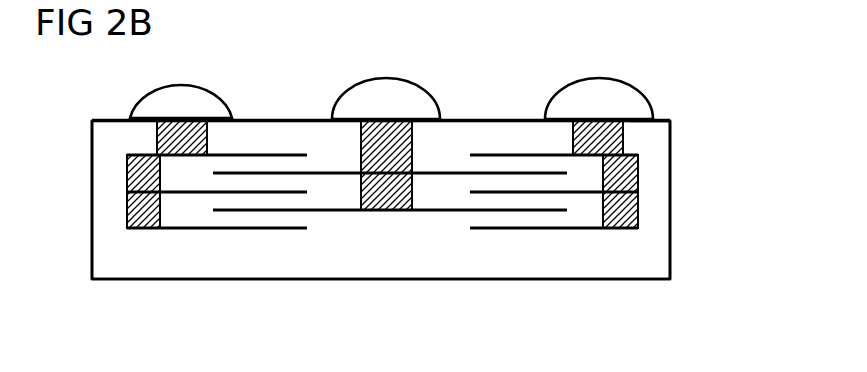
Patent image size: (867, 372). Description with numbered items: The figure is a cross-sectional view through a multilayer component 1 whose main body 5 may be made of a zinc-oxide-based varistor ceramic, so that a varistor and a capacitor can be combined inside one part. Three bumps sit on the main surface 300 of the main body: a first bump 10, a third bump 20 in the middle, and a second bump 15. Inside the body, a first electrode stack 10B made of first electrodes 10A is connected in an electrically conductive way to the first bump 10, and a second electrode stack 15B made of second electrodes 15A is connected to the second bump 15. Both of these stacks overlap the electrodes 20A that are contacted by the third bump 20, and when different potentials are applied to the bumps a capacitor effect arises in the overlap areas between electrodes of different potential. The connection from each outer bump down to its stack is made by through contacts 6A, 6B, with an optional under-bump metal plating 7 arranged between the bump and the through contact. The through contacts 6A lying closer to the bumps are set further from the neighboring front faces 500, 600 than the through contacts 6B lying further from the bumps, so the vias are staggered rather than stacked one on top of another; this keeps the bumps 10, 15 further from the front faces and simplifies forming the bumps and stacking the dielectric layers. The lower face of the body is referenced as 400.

The semiconductor device 1 is at (284, 92).
The main body 5 is at (652, 262).
The under-bump metal plating 7 is at (654, 117).
The through contact 6A is at (156, 136).
The through contact 6B is at (127, 168).
The first bump 10 is at (181, 104).
The first electrode 10A is at (212, 160).
The first electrode stack 10B is at (114, 154).
The second bump 15 is at (598, 105).
The second electrode 15A is at (566, 160).
The second electrode stack 15B is at (646, 154).
The third bump 20 is at (387, 105).
The electrode of the third electrode stack 20A is at (341, 176).
The main surface 300 is at (471, 118).
The bottom surface layer 400 is at (443, 281).
The front face 500 is at (92, 240).
The front face 600 is at (672, 228).